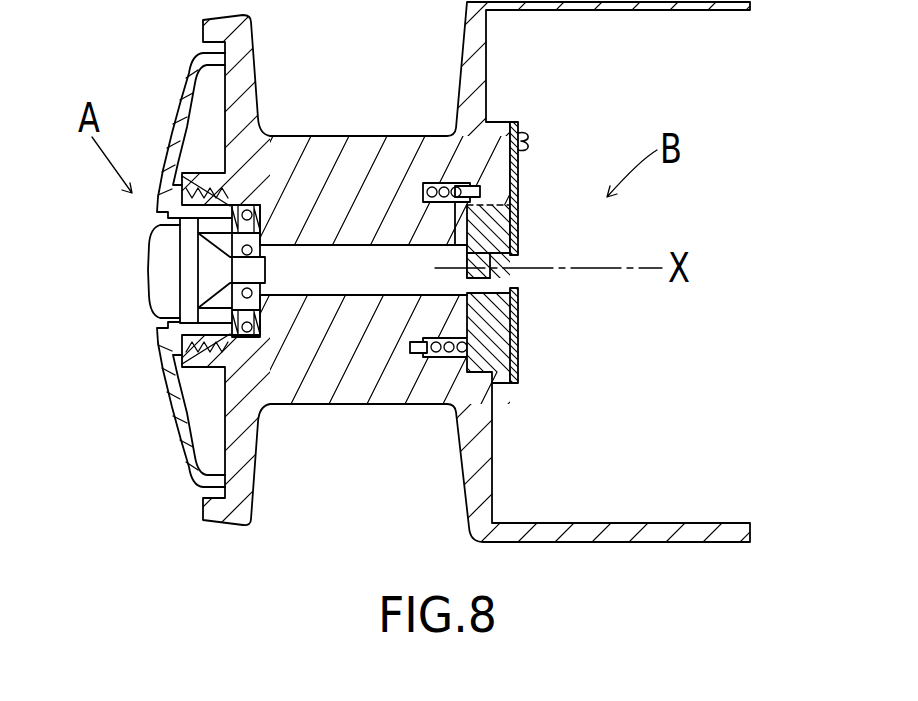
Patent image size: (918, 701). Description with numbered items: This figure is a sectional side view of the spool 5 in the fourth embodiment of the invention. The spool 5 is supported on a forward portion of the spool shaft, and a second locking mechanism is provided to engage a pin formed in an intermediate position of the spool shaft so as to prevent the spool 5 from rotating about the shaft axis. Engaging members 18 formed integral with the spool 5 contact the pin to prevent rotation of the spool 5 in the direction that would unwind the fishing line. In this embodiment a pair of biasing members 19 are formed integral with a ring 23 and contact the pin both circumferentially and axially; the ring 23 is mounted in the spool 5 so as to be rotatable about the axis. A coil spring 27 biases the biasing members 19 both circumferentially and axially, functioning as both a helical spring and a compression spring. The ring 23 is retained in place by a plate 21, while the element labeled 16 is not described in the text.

The spool 5 is at (372, 140).
The inner block / bearing carrier 16 is at (160, 290).
The engaging member 18 is at (500, 284).
The biasing member 19 is at (492, 238).
The plate 21 is at (518, 165).
The ring 23 is at (503, 350).
The coil spring 27 is at (448, 356).